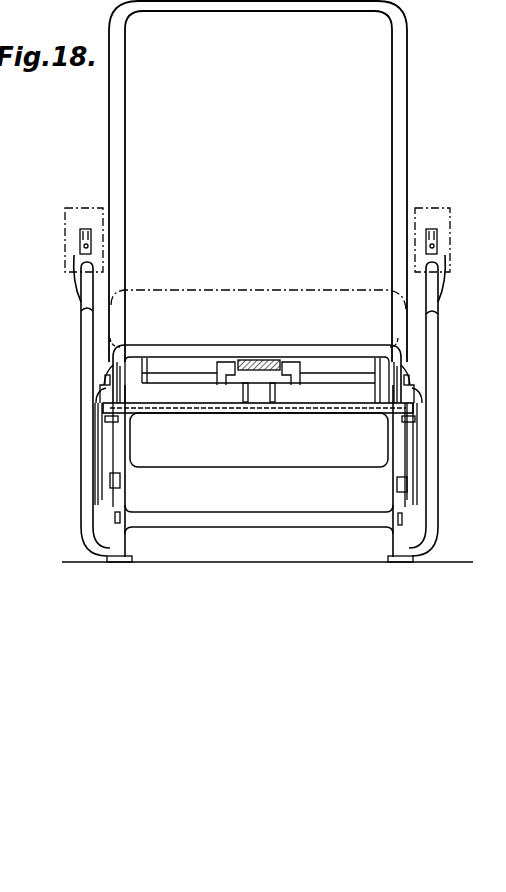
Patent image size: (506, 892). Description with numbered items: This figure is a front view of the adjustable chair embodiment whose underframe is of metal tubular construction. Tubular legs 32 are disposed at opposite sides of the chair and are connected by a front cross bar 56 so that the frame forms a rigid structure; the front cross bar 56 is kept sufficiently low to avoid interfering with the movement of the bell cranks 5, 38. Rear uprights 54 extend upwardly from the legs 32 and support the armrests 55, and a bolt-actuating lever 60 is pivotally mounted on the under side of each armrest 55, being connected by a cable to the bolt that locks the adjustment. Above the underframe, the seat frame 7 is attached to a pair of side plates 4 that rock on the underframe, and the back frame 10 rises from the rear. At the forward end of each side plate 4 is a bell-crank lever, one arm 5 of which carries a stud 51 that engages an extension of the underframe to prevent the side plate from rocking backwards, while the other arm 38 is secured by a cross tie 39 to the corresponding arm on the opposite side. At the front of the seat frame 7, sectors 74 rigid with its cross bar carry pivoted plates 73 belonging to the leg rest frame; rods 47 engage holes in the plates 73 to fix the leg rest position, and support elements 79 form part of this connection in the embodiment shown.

The back frame 10 is at (124, 173).
The seat frame 7 is at (176, 348).
The sector 74 is at (143, 362).
The support element 79 is at (116, 364).
The plate 73 is at (140, 388).
The rod 47 is at (214, 383).
The cross tie 39 is at (261, 413).
The stud 51 is at (105, 418).
The bell-crank lever arm 5 is at (97, 393).
The bell-crank lever arm 38 is at (100, 432).
The side plate 4 is at (109, 482).
The front cross bar 56 is at (272, 527).
The upright 54 is at (81, 370).
The tubular leg 32 is at (121, 548).
The armrest 55 is at (80, 234).
The bolt-actuating lever 60 is at (80, 246).